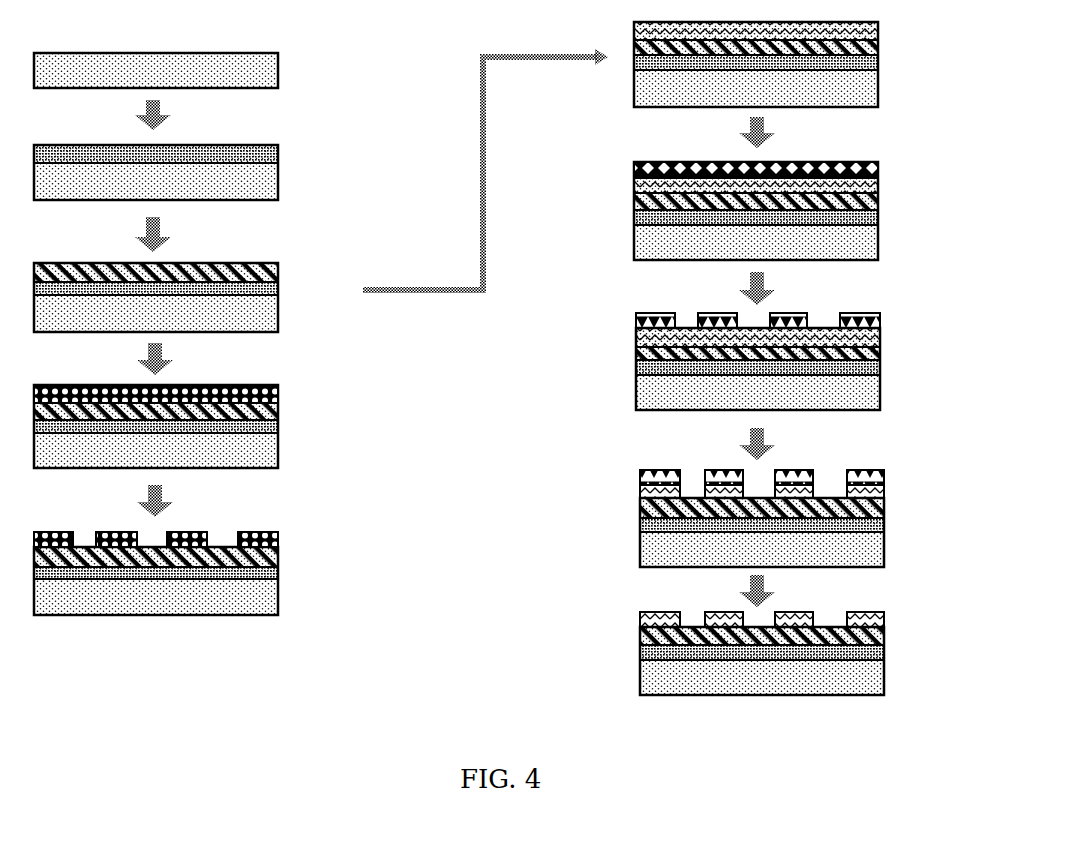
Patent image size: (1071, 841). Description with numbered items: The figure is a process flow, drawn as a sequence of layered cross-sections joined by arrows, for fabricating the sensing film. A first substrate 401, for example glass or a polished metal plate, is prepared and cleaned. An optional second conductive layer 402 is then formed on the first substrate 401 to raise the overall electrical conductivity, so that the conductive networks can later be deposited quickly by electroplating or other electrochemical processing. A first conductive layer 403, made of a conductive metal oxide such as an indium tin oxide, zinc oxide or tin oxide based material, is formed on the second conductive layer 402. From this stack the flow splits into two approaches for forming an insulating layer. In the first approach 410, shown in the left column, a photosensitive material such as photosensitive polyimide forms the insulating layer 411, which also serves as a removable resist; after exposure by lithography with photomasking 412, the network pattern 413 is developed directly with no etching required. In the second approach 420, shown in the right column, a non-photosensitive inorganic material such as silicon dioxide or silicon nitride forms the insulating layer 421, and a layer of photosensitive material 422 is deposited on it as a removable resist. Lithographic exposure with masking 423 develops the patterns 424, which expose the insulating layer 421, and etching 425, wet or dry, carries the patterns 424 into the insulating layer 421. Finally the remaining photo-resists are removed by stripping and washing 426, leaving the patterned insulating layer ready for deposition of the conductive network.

The first substrate 401 is at (156, 70).
The second conductive layer 402 is at (236, 158).
The first conductive layer 403 is at (250, 272).
The first approach 410 is at (181, 359).
The insulating layer 411 is at (255, 397).
The photomasking 412 is at (185, 501).
The network pattern 413 is at (207, 542).
The second approach 420 is at (485, 169).
The insulating layer 421 is at (840, 33).
The layer of photosensitive material 422 is at (845, 170).
The masking 423 is at (787, 288).
The patterns 424 is at (807, 320).
The etching 425 is at (787, 444).
The stripping and washing 426 is at (790, 590).